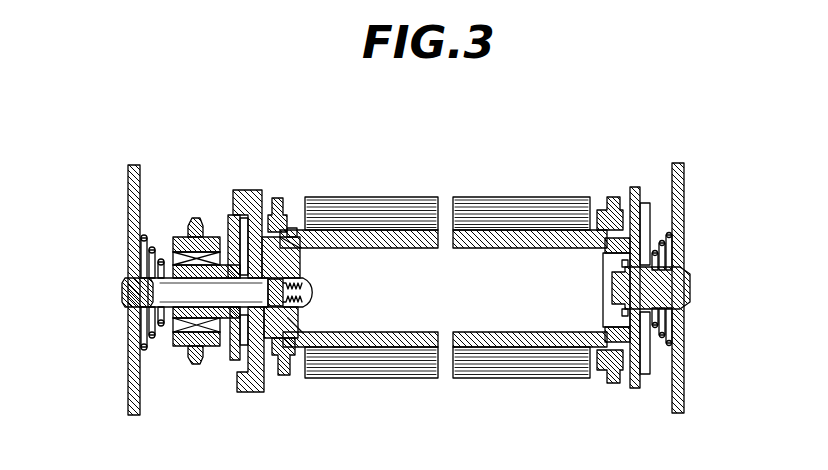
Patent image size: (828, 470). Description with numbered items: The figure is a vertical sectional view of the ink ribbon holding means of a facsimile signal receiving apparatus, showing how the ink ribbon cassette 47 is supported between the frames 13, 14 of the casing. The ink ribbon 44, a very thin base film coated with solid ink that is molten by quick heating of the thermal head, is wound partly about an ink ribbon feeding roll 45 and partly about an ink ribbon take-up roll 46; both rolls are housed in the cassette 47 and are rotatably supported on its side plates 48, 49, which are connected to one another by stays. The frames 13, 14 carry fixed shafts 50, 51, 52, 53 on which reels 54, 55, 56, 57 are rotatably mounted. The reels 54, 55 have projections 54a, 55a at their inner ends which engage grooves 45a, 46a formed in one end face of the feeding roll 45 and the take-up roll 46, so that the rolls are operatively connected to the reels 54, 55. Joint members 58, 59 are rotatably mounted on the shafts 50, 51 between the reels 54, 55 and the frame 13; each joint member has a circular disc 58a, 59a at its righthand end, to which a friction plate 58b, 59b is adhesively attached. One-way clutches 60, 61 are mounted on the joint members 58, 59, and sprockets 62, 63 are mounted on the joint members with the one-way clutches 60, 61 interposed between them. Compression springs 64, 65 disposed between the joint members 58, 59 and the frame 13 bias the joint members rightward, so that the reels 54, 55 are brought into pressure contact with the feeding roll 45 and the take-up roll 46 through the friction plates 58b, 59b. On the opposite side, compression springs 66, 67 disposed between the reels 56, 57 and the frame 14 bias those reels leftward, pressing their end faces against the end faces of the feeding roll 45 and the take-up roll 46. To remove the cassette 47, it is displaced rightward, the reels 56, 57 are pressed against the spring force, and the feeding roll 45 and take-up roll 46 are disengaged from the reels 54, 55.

The frame 13 is at (128, 352).
The frame 14 is at (685, 380).
The ink ribbon 44 is at (489, 292).
The ink ribbon feeding roll 45 is at (489, 292).
The ink ribbon take-up roll 46 is at (388, 350).
The groove 45a is at (371, 287).
The groove 46a is at (306, 268).
The cassette 47 is at (497, 386).
The side plate 48 is at (282, 205).
The side plate 49 is at (610, 200).
The shaft 50 is at (96, 292).
The shaft 51 is at (123, 296).
The shaft 52 is at (691, 274).
The shaft 53 is at (692, 284).
The reel 54 is at (437, 317).
The reel 55 is at (268, 390).
The projection 54a is at (359, 288).
The projection 55a is at (303, 249).
The reel 56 is at (630, 315).
The reel 57 is at (638, 392).
The joint member 58 is at (280, 330).
The joint member 59 is at (237, 342).
The circular disc 58a is at (207, 253).
The circular disc 59a is at (234, 222).
The friction plate 58b is at (288, 254).
The friction plate 59b is at (255, 200).
The one-way clutch 60 is at (194, 312).
The one-way clutch 61 is at (180, 318).
The sprocket 62 is at (234, 335).
The sprocket 63 is at (200, 360).
The compression spring 64 is at (158, 233).
The compression spring 65 is at (146, 236).
The compression spring 66 is at (658, 237).
The compression spring 67 is at (668, 233).